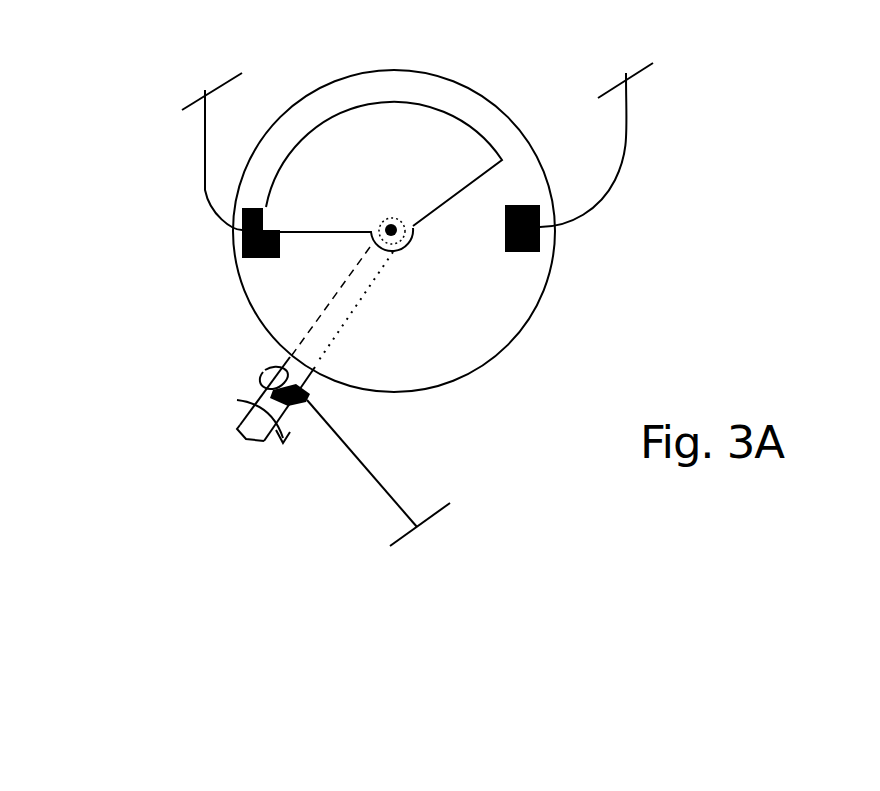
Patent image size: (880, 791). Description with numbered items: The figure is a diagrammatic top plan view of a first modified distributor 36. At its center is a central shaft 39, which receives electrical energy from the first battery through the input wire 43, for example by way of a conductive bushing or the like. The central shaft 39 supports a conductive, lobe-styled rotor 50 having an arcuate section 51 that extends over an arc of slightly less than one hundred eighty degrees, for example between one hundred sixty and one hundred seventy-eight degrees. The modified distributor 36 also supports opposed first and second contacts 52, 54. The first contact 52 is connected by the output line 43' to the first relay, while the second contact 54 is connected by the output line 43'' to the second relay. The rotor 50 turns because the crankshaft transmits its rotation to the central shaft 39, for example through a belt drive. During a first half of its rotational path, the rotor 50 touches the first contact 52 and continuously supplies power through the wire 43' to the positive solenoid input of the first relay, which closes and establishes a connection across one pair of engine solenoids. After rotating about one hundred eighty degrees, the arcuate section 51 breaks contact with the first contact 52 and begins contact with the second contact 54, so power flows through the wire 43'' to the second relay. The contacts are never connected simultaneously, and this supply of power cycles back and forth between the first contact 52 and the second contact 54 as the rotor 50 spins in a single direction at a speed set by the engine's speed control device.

The first modified distributor 36 is at (113, 375).
The central shaft 39 is at (252, 427).
The input wire 43 is at (378, 473).
The output line 43' is at (228, 151).
The output line 43'' is at (616, 145).
The lobe-styled rotor 50 is at (416, 126).
The arcuate section 51 is at (353, 113).
The first contact 52 is at (258, 258).
The second contact 54 is at (534, 251).